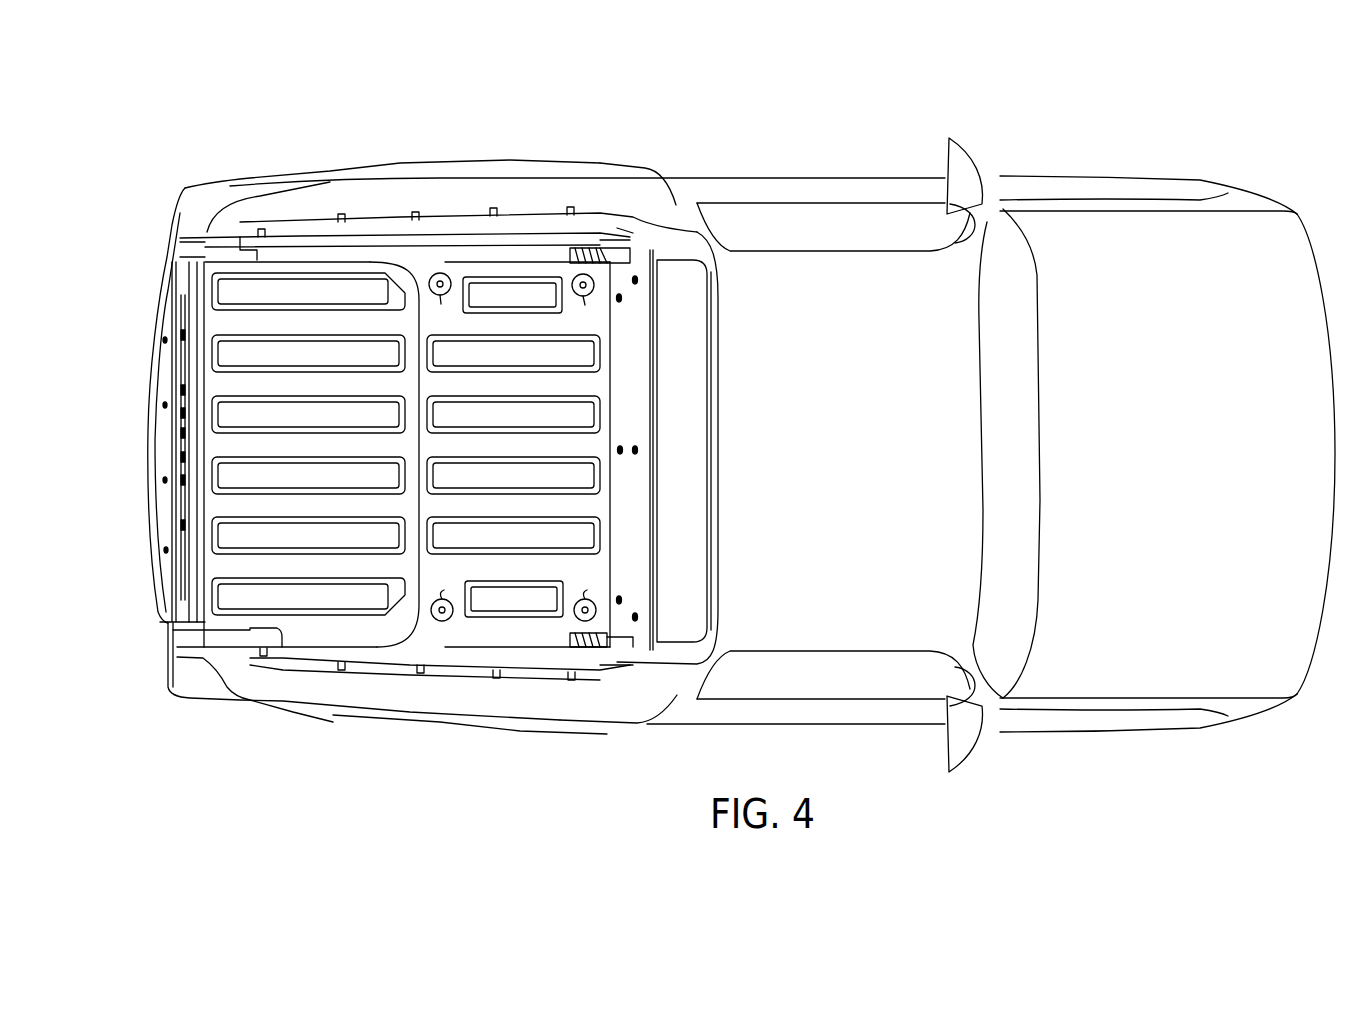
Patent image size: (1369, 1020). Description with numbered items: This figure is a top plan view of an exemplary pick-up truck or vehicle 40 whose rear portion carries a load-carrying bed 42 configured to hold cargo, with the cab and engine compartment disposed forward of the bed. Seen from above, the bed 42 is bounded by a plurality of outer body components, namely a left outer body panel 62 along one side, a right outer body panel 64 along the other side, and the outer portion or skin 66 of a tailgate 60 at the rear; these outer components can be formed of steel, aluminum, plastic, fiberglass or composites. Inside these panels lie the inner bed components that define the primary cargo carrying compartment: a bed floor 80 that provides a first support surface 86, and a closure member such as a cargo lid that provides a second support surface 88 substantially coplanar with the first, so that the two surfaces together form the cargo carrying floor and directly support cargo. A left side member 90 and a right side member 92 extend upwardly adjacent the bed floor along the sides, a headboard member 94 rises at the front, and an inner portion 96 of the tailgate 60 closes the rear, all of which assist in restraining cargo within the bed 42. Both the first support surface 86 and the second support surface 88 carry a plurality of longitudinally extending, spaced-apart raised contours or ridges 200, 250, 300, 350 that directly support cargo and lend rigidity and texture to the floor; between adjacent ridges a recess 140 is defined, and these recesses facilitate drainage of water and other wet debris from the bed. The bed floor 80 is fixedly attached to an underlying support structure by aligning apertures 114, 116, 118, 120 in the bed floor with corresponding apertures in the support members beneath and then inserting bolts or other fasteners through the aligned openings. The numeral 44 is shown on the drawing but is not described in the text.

The vehicle 40 is at (1035, 141).
The bed 42 is at (530, 142).
The tailgate 44 is at (203, 566).
The tailgate 60 is at (140, 518).
The left outer body panel 62 is at (422, 197).
The right outer body panel 64 is at (425, 704).
The outer portion of tailgate 66 is at (150, 363).
The bed floor 80 is at (578, 512).
The first support surface 86 is at (598, 443).
The second support surface 88 is at (343, 263).
The left side member 90 is at (496, 250).
The right side member 92 is at (527, 657).
The headboard member 94 is at (630, 572).
The inner portion of tailgate 96 is at (200, 320).
The aperture 114 is at (585, 303).
The aperture 116 is at (444, 303).
The aperture 118 is at (580, 591).
The aperture 120 is at (444, 591).
The recess 140 is at (578, 385).
The ridge 200 is at (292, 290).
The ridge 250 is at (435, 311).
The ridge 300 is at (466, 341).
The ridge 350 is at (486, 371).